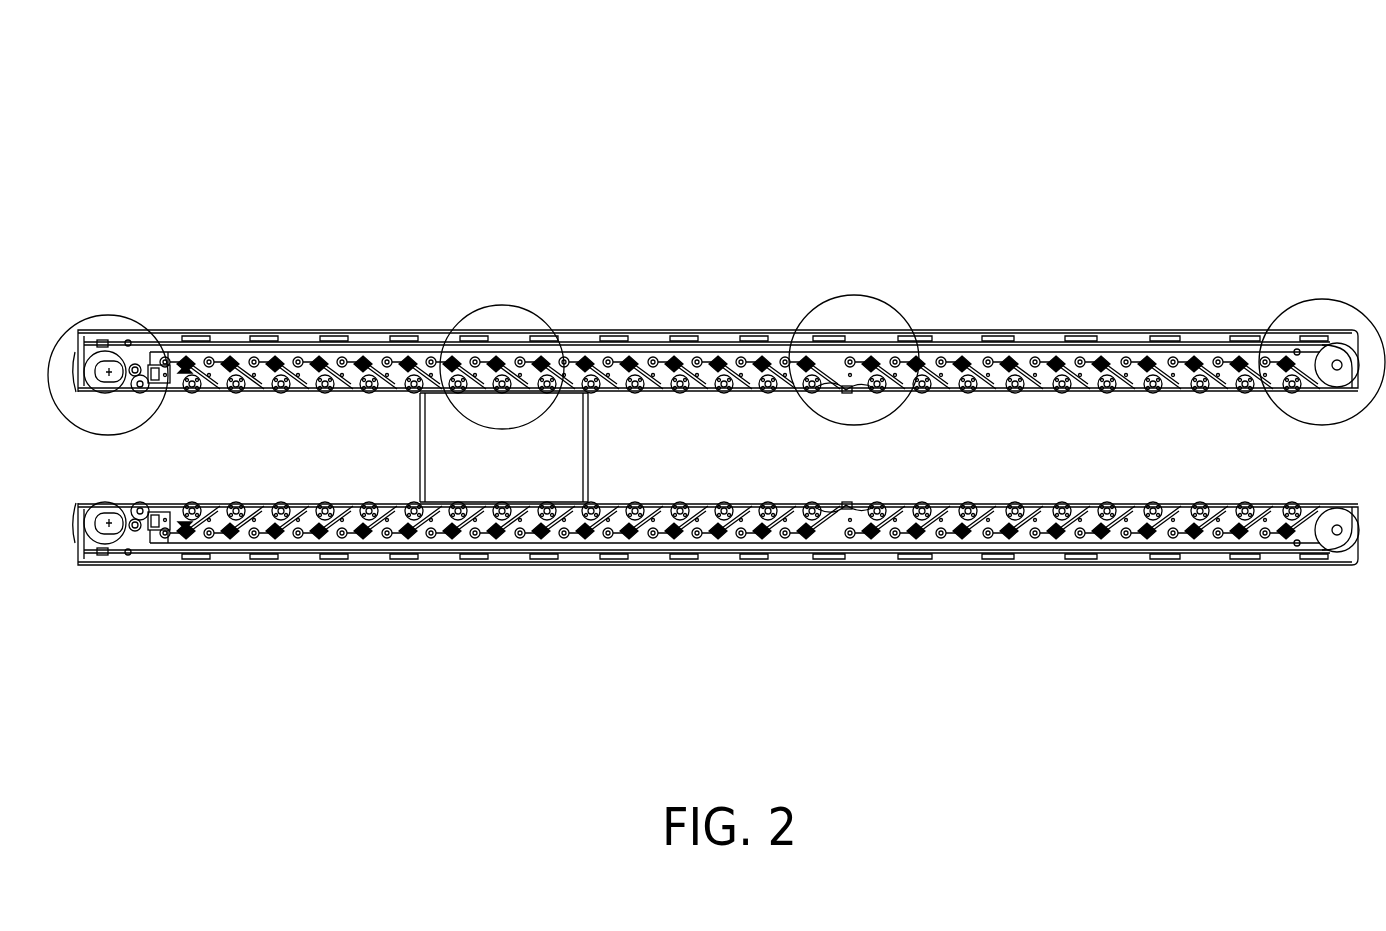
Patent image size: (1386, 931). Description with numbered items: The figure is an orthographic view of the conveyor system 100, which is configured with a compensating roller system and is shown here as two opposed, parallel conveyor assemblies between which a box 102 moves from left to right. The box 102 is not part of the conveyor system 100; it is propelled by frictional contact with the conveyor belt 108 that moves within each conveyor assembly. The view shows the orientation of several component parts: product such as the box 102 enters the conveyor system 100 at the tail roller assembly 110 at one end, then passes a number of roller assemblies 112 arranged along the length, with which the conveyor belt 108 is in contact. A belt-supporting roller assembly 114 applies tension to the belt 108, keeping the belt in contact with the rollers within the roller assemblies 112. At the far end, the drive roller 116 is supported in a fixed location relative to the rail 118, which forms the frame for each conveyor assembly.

The conveyor system 100 is at (365, 183).
The box 102 is at (588, 445).
The conveyor belt 108 is at (318, 393).
The tail roller assembly 110 is at (74, 312).
The roller assembly 112 is at (453, 320).
The belt-supporting roller assembly 114 is at (887, 302).
The drive roller 116 is at (1262, 335).
The rail 118 is at (1075, 330).